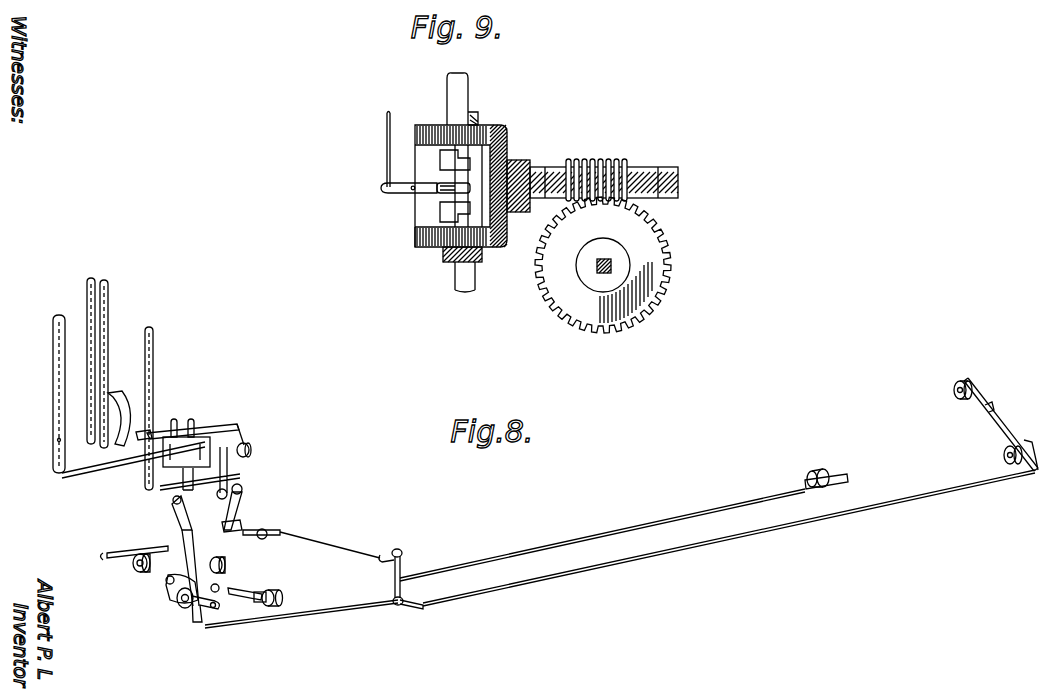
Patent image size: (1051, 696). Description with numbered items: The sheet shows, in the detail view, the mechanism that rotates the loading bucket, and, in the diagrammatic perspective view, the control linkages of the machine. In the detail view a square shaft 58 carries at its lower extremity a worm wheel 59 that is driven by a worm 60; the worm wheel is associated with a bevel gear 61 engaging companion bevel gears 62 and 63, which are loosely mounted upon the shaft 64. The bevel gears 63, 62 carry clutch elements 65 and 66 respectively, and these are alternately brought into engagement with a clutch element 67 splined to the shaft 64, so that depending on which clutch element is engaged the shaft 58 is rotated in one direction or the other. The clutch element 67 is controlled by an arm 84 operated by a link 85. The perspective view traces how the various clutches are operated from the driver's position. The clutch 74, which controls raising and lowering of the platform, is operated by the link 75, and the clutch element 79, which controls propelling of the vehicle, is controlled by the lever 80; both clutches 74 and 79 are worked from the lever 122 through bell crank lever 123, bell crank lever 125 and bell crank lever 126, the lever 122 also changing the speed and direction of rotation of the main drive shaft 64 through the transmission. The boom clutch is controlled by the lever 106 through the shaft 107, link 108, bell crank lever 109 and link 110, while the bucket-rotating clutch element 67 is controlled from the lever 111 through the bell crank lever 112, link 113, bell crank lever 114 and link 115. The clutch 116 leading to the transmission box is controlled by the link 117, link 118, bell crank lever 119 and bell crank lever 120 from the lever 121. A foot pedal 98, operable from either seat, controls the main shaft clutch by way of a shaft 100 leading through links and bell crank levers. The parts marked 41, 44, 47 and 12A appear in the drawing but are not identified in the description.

In FIG. 8, the roller 41 is at (275, 592).
In FIG. 8, the roller 44 is at (180, 606).
In FIG. 8, the hook arm 47 is at (118, 392).
In FIG. 9, the square shaft 58 is at (612, 262).
In FIG. 9, the worm wheel 59 is at (668, 270).
In FIG. 9, the worm 60 is at (600, 162).
In FIG. 9, the bevel gear 61 is at (512, 158).
In FIG. 9, the companion bevel gear 62 is at (488, 125).
In FIG. 9, the companion bevel gear 63 is at (422, 238).
In FIG. 9, the main drive shaft 64 is at (476, 280).
In FIG. 9, the clutch element 65 is at (440, 155).
In FIG. 9, the clutch element 66 is at (440, 218).
In FIG. 9, the clutch element 67 is at (440, 196).
In FIG. 8, the clutch element 67 is at (826, 476).
In FIG. 8, the clutch 74 is at (1026, 438).
In FIG. 8, the link 75 is at (869, 506).
In FIG. 8, the clutch element 79 is at (975, 382).
In FIG. 8, the lever 80 is at (990, 405).
In FIG. 9, the arm 84 is at (383, 188).
In FIG. 8, the arm 84 is at (845, 481).
In FIG. 9, the link 85 is at (387, 122).
In FIG. 8, the link 85 is at (733, 505).
In FIG. 8, the foot pedal 98 is at (142, 430).
In FIG. 8, the shaft 100 is at (176, 588).
In FIG. 8, the lever 106 is at (60, 318).
In FIG. 8, the shaft 107 is at (228, 566).
In FIG. 8, the link 108 is at (228, 468).
In FIG. 8, the bell crank lever 109 is at (244, 444).
In FIG. 8, the link 110 is at (112, 462).
In FIG. 8, the lever 111 is at (153, 330).
In FIG. 8, the bell crank lever 112 is at (197, 614).
In FIG. 8, the link 113 is at (196, 566).
In FIG. 8, the bell crank lever 114 is at (172, 505).
In FIG. 8, the link 115 is at (178, 495).
In FIG. 8, the clutch 116 is at (133, 568).
In FIG. 8, the link 117 is at (106, 556).
In FIG. 8, the link 118 is at (123, 553).
In FIG. 8, the bell crank lever 119 is at (240, 495).
In FIG. 8, the bell crank lever 120 is at (176, 425).
In FIG. 8, the lever 121 is at (91, 278).
In FIG. 8, the lever 122 is at (108, 286).
In FIG. 8, the bell crank lever 123 is at (195, 433).
In FIG. 8, the bell crank lever 125 is at (279, 530).
In FIG. 8, the bell crank lever 126 is at (404, 566).
In FIG. 8, the lever extension 12A is at (236, 526).